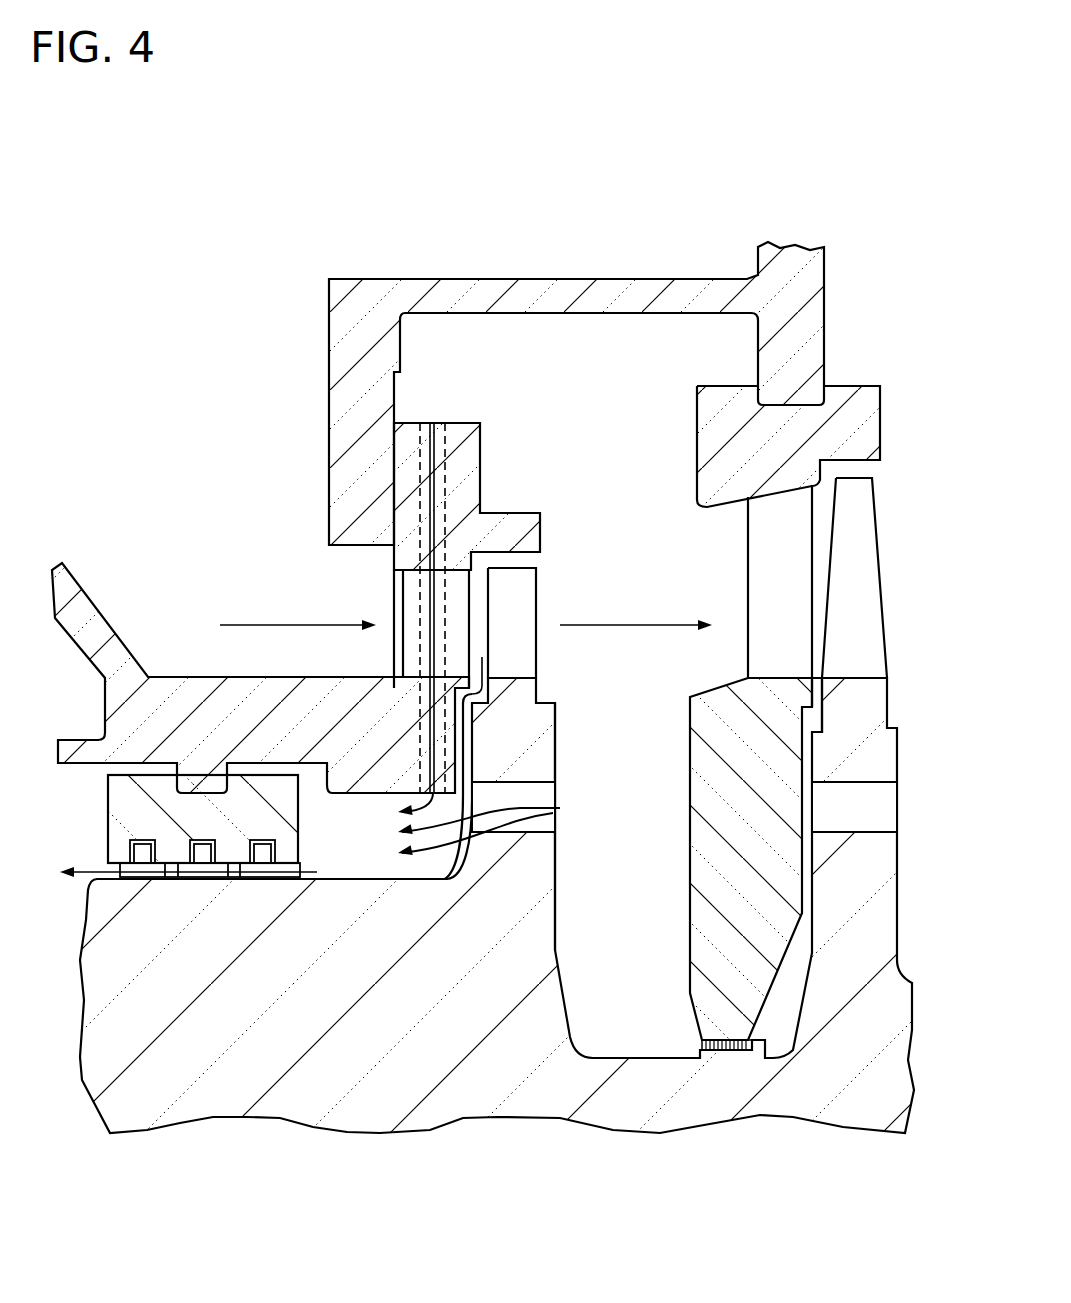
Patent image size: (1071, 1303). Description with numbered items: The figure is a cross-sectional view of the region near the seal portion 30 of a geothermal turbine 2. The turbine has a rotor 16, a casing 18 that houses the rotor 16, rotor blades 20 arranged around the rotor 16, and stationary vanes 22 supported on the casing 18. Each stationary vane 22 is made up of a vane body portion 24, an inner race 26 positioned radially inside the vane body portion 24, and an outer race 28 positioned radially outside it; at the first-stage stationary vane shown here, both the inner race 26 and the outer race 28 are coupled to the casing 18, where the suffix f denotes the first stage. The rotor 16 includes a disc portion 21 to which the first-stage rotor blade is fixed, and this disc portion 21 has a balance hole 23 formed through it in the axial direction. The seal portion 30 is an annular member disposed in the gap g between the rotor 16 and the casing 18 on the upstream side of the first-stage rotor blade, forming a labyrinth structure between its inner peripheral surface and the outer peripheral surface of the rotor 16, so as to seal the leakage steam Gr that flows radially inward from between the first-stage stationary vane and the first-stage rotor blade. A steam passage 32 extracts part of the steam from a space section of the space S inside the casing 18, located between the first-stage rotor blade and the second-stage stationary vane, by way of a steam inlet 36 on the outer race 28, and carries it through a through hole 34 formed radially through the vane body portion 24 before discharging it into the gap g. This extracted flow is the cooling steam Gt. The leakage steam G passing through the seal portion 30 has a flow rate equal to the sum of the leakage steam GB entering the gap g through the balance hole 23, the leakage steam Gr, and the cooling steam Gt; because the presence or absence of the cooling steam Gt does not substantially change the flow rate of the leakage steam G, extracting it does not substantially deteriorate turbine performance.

The geothermal turbine 2 is at (692, 190).
The casing 18 is at (548, 279).
The space S is at (621, 358).
The outer race 28 is at (735, 385).
The steam inlet 36 is at (427, 423).
The steam passage 32 is at (452, 480).
The vane body portion 24 is at (394, 590).
The stationary vanes 22 is at (394, 658).
The inner race 26 is at (394, 733).
The through hole 34 is at (448, 592).
The rotor blades 20 is at (880, 556).
The rotor 16 is at (905, 975).
The disc portion 21 is at (555, 725).
The balance hole 23 is at (555, 800).
The cooling steam Gt is at (470, 748).
The leakage steam GB is at (473, 857).
The leakage steam Gr is at (425, 880).
The first-stage f is at (290, 622).
The leakage steam G is at (97, 872).
The seal portion 30 is at (312, 866).
The gap g is at (372, 884).